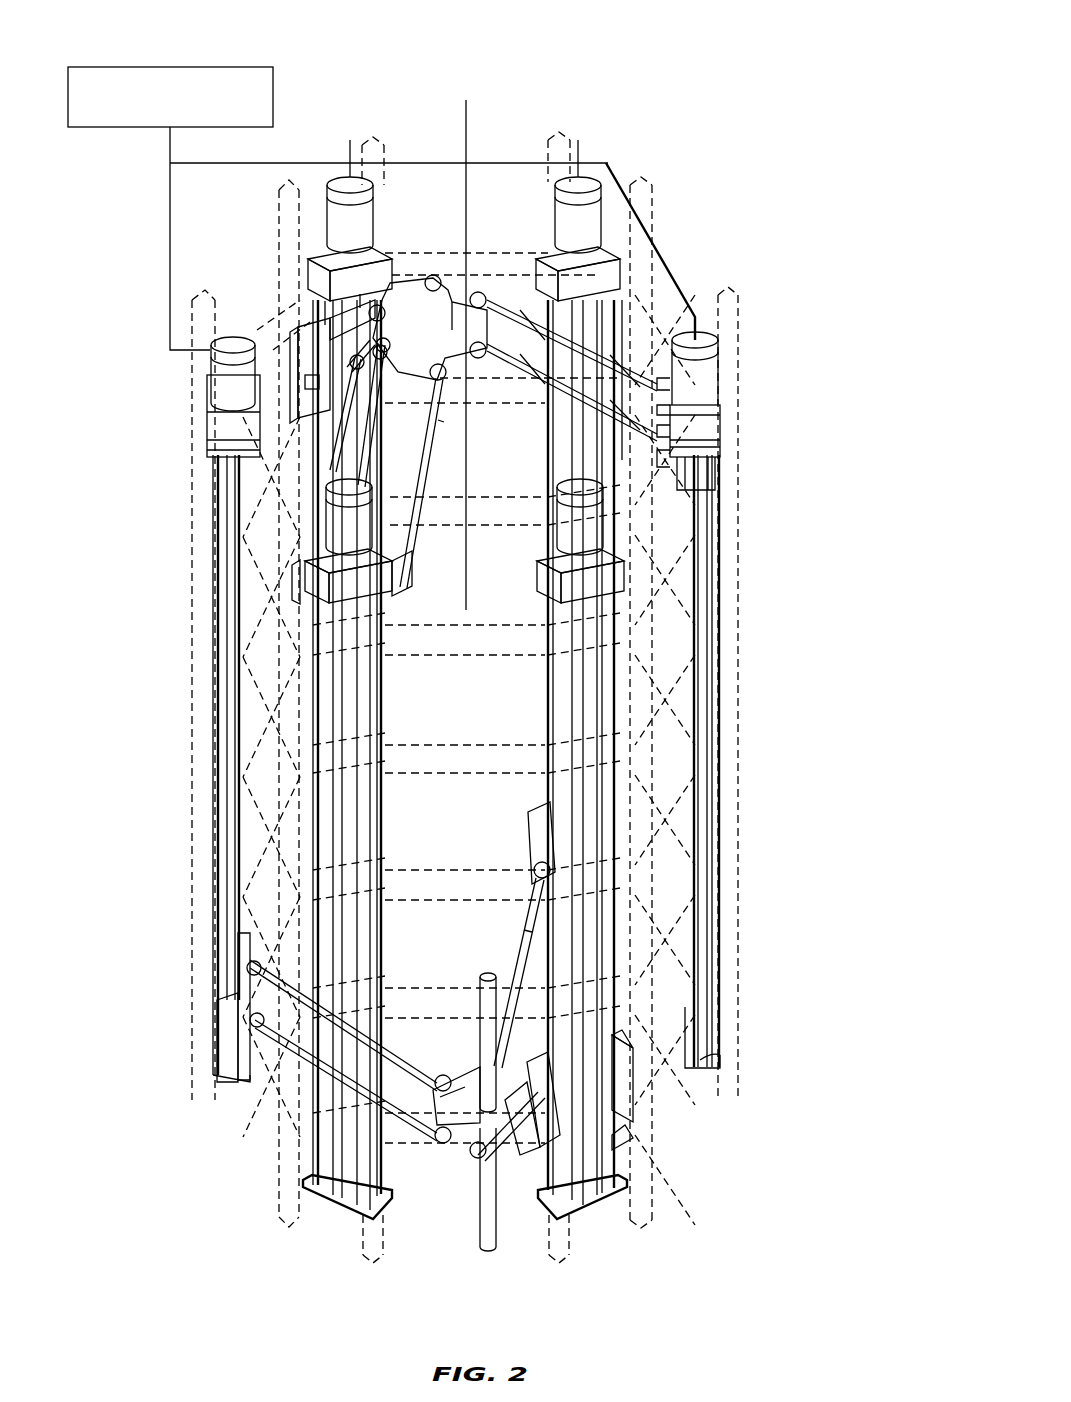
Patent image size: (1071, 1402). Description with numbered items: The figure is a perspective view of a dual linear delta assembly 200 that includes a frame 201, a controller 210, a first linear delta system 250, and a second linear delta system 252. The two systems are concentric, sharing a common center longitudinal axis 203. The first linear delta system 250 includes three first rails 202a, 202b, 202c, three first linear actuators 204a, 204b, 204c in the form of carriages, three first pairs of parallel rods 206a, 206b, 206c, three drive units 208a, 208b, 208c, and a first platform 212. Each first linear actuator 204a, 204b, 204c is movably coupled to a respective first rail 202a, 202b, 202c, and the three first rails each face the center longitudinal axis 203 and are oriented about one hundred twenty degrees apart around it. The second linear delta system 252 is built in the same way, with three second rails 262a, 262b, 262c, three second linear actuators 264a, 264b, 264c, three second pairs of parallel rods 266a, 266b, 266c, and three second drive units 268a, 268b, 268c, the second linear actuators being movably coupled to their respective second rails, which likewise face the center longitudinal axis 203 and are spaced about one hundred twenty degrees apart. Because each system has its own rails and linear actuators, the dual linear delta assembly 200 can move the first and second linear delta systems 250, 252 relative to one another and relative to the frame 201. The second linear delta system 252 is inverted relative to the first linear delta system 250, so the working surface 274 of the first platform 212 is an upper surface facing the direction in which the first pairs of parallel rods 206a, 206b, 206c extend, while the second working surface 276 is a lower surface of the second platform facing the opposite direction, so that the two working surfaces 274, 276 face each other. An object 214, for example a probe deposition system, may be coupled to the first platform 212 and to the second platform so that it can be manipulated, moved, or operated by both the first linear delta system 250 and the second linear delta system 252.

The dual linear delta assembly 200 is at (858, 205).
The frame 201 is at (728, 318).
The first rail 202a is at (560, 678).
The first rail 202b is at (215, 740).
The first rail 202c is at (603, 330).
The center longitudinal axis 203 is at (470, 118).
The first linear actuator 204a is at (625, 1107).
The first linear actuator 204b is at (225, 1060).
The first linear actuator 204c is at (538, 815).
The first pair of parallel rods 206a is at (518, 1145).
The first pair of parallel rods 206b is at (250, 958).
The first pair of parallel rods 206c is at (500, 948).
The drive unit 208a is at (600, 488).
The drive unit 208b is at (232, 350).
The drive unit 208c is at (582, 188).
The controller 210 is at (203, 67).
The first platform 212 is at (470, 1128).
The object 214 is at (487, 1250).
The first linear delta system 250 is at (770, 800).
The second linear delta system 252 is at (153, 293).
The second rail 262a is at (372, 722).
The second rail 262b is at (415, 440).
The second rail 262c is at (712, 585).
The second linear actuator 264a is at (330, 575).
The second linear actuator 264b is at (310, 330).
The second linear actuator 264c is at (702, 425).
The second pair of parallel rods 266a is at (437, 470).
The second pair of parallel rods 266b is at (360, 450).
The second pair of parallel rods 266c is at (520, 298).
The second drive unit 268a is at (338, 492).
The second drive unit 268b is at (350, 192).
The second drive unit 268c is at (708, 347).
The working surface 274 is at (470, 1063).
The working surface 276 is at (408, 378).